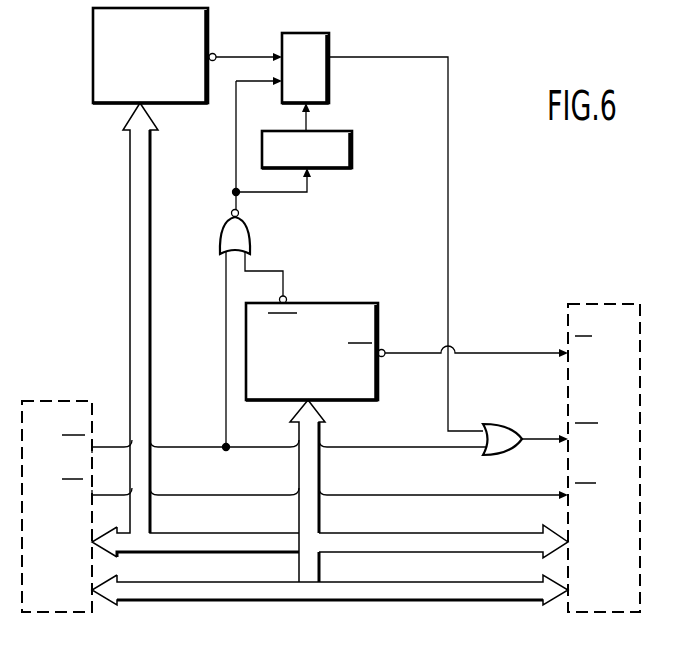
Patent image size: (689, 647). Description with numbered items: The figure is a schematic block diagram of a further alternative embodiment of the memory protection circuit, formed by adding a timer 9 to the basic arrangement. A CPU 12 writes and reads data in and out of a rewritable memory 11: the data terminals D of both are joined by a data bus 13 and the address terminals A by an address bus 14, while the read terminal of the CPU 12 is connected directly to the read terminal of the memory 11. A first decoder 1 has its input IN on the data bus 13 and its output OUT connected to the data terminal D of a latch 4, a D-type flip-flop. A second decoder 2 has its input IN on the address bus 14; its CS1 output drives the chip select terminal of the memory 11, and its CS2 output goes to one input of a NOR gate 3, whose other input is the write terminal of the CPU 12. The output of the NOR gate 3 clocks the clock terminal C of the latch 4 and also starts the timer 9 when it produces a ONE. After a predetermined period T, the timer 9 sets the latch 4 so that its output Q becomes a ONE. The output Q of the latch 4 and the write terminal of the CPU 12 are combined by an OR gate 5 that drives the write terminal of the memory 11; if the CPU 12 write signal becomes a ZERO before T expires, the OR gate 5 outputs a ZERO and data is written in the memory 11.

The first decoder 1 is at (93, 33).
The second decoder 2 is at (343, 303).
The NOR gate 3 is at (251, 244).
The latch 4 is at (282, 33).
The OR gate 5 is at (498, 424).
The timer 9 is at (353, 150).
The memory 11 is at (568, 305).
The CPU 12 is at (48, 400).
The data bus 13 is at (339, 533).
The address bus 14 is at (341, 582).